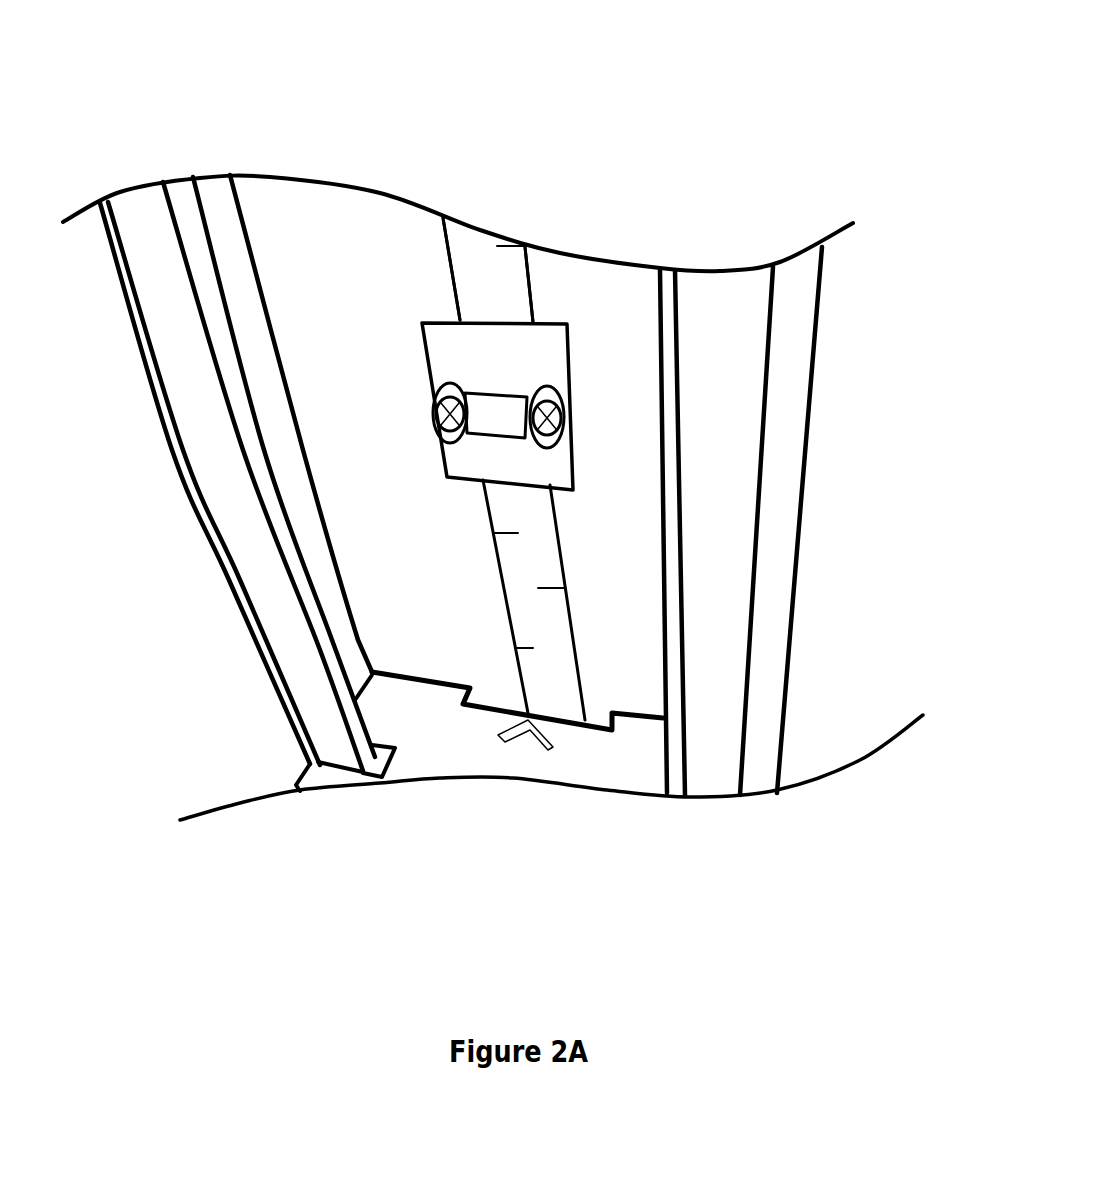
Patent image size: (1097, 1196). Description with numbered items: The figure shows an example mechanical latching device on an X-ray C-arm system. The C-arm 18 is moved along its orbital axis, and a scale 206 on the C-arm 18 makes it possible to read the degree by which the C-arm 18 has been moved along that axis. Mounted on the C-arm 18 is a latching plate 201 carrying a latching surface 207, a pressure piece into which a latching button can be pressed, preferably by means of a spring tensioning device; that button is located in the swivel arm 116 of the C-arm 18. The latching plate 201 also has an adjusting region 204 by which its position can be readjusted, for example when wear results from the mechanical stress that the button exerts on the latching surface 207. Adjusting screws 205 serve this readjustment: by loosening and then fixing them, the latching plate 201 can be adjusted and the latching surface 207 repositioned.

The C-arm 18 is at (273, 597).
The swivel arm 116 is at (610, 755).
The latching plate 201 is at (530, 348).
The adjusting region 204 is at (572, 373).
The adjusting screw 205 is at (438, 430).
The scale 206 is at (475, 297).
The latching surface 207 is at (507, 403).